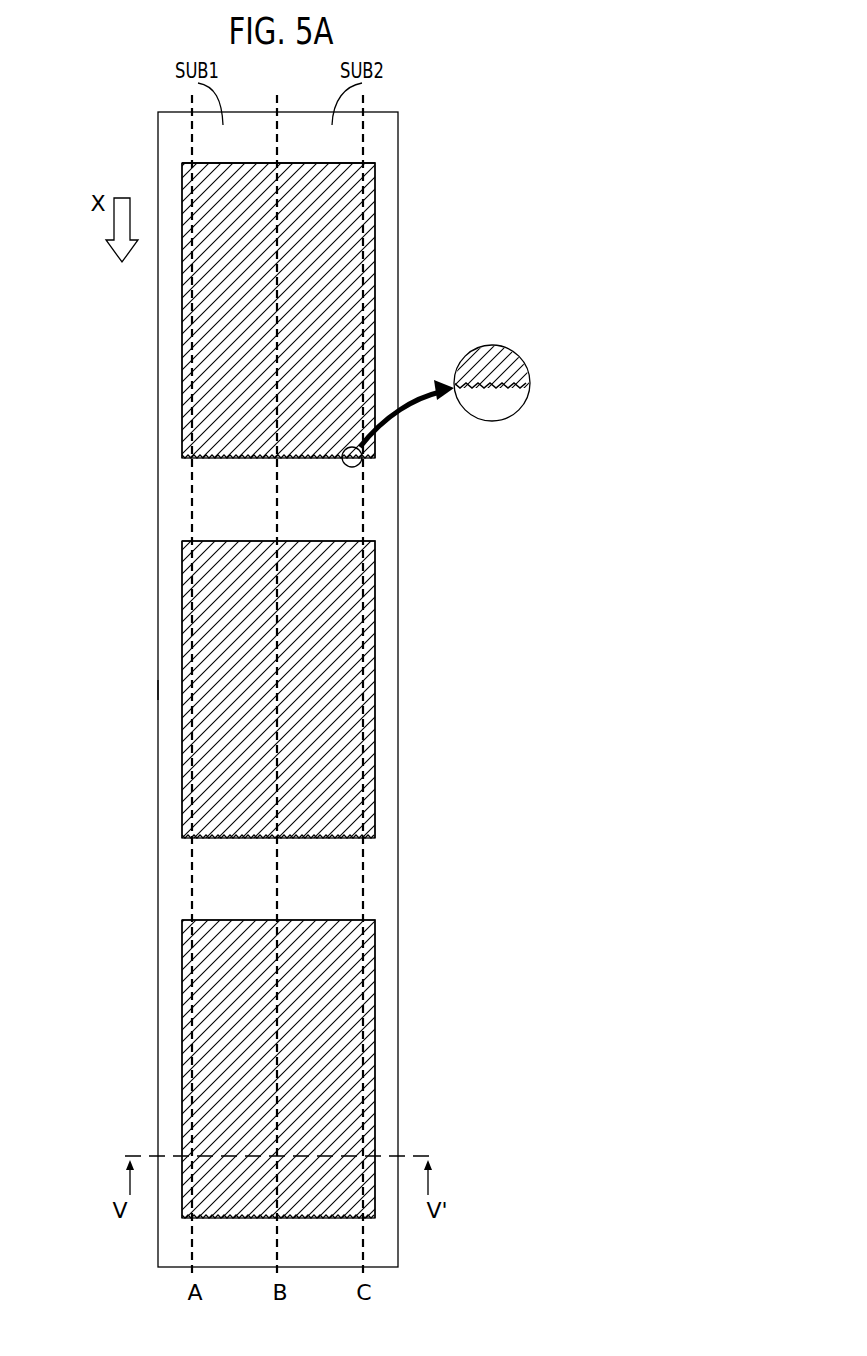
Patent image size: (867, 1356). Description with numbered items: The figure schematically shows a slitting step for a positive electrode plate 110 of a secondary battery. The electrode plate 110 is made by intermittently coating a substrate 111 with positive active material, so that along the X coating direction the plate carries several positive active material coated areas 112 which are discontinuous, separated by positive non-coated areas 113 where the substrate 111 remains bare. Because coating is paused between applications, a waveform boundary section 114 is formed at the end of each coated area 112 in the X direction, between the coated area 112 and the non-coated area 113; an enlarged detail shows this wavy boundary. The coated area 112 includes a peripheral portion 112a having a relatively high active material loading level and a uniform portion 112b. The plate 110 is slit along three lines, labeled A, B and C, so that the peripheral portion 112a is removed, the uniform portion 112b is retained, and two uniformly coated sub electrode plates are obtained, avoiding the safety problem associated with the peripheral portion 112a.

The positive electrode plate 110 is at (112, 128).
The substrate 111 is at (148, 686).
The positive active material coated area 112 is at (472, 200).
The peripheral portion 112a is at (187, 310).
The uniform portion 112b is at (302, 222).
The positive non-coated area 113 is at (205, 508).
The waveform boundary section 114 is at (199, 460).